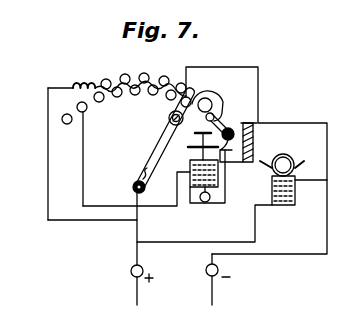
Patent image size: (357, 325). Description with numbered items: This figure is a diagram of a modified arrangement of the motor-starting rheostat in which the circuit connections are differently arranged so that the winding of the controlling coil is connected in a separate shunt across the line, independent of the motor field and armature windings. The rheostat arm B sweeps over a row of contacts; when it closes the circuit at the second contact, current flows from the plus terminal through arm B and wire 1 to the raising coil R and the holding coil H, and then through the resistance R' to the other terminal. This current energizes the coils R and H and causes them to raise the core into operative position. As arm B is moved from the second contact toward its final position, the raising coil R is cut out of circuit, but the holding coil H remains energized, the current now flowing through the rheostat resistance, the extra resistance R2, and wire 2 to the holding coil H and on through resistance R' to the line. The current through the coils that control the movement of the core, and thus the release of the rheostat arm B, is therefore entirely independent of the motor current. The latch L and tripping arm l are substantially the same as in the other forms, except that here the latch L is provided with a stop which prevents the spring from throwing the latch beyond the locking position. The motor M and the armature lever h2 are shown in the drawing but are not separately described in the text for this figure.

The extra resistance R2 is at (84, 82).
The wire 2 is at (48, 165).
The wire 1 is at (83, 165).
The rheostat arm B is at (161, 141).
The latch L is at (207, 111).
The tripping arm l is at (195, 146).
The holding coil H is at (191, 166).
The raising coil R is at (213, 176).
The armature lever h2 is at (224, 138).
The resistance R' is at (249, 133).
The magnet M is at (282, 191).